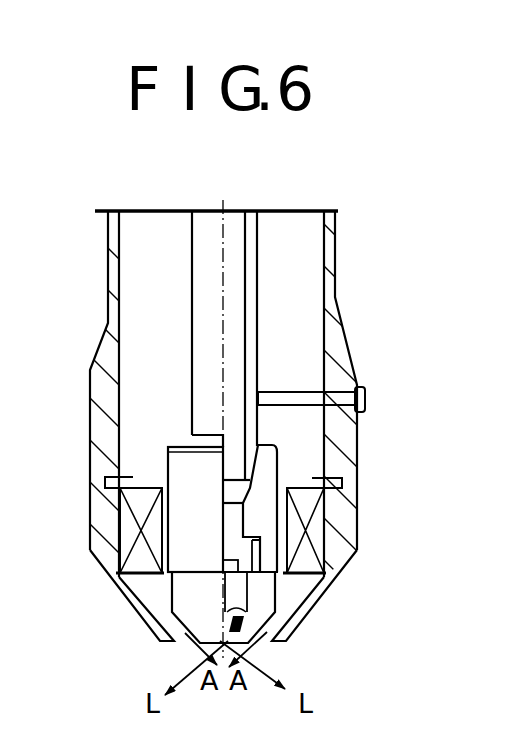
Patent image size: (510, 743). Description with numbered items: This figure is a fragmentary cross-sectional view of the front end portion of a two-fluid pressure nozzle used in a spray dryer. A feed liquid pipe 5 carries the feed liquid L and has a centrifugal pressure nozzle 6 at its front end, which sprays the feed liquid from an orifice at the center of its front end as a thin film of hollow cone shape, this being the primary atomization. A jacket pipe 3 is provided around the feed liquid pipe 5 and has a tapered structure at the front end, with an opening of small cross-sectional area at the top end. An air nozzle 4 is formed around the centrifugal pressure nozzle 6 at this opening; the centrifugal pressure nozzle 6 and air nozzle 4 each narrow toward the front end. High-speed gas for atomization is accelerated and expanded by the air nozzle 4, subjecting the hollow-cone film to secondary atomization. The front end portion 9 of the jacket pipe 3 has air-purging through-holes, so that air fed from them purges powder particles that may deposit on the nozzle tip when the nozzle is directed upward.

The jacket pipe 3 is at (327, 258).
The air nozzle 4 is at (277, 620).
The feed liquid pipe 5 is at (192, 247).
The centrifugal pressure nozzle 6 is at (178, 520).
The front end portion 9 is at (325, 596).